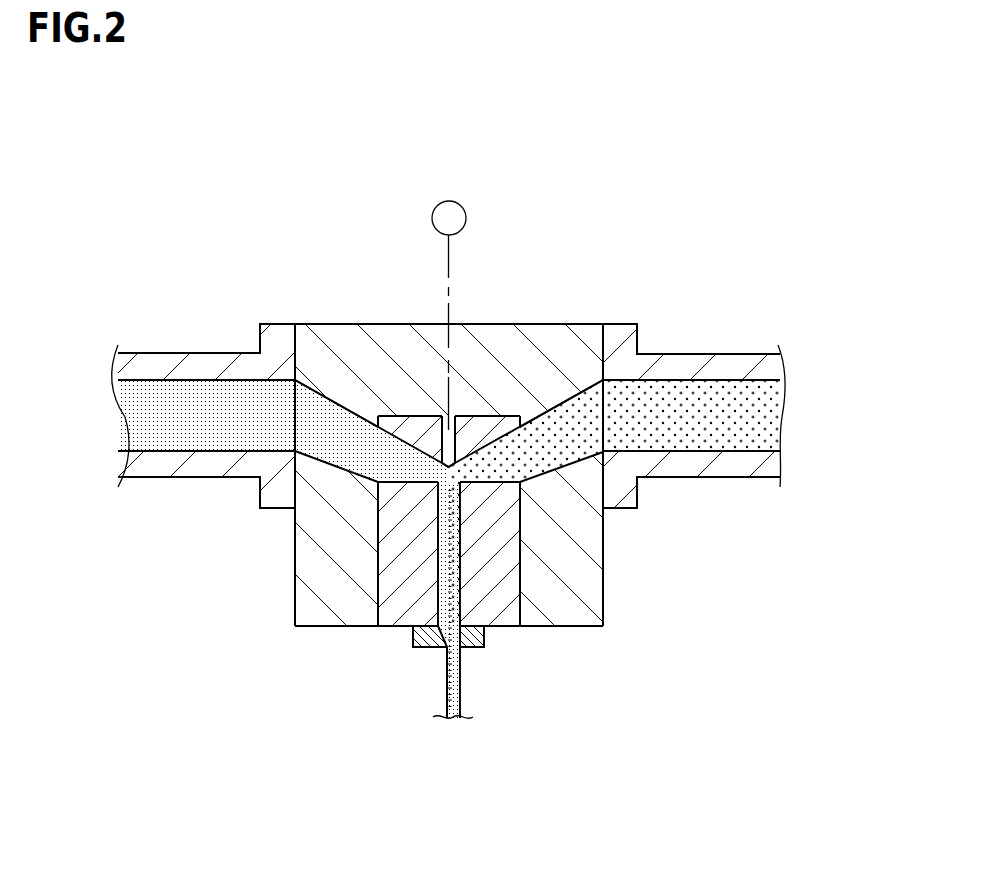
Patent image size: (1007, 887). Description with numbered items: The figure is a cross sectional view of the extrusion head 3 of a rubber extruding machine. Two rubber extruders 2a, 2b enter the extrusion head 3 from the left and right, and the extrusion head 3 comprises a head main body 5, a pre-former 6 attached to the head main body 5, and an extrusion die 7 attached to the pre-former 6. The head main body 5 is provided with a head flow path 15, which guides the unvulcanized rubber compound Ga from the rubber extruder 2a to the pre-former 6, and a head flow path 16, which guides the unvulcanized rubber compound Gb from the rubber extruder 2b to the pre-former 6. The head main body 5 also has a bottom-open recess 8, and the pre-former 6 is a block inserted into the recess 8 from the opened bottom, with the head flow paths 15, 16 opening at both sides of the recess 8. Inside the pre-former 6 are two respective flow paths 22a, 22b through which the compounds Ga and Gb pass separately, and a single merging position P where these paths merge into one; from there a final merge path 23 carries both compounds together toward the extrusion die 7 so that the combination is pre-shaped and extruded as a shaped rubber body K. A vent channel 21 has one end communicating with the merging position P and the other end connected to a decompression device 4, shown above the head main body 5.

The rubber extruder 2a is at (158, 353).
The rubber extruder 2b is at (737, 354).
The extrusion head 3 is at (554, 292).
The decompression device 4 is at (460, 203).
The head main body 5 is at (331, 324).
The pre-former 6 is at (377, 558).
The extrusion die 7 is at (412, 637).
The recess 8 is at (388, 586).
The head flow path 15 is at (340, 417).
The head flow path 16 is at (542, 417).
The vent channel 21 is at (441, 430).
The respective flow path 22a is at (393, 480).
The respective flow path 22b is at (505, 480).
The final merge path 23 is at (453, 580).
The unvulcanized rubber compound Ga is at (128, 417).
The unvulcanized rubber compound Gb is at (768, 415).
The shaped rubber body K is at (460, 693).
The merging position P is at (462, 450).